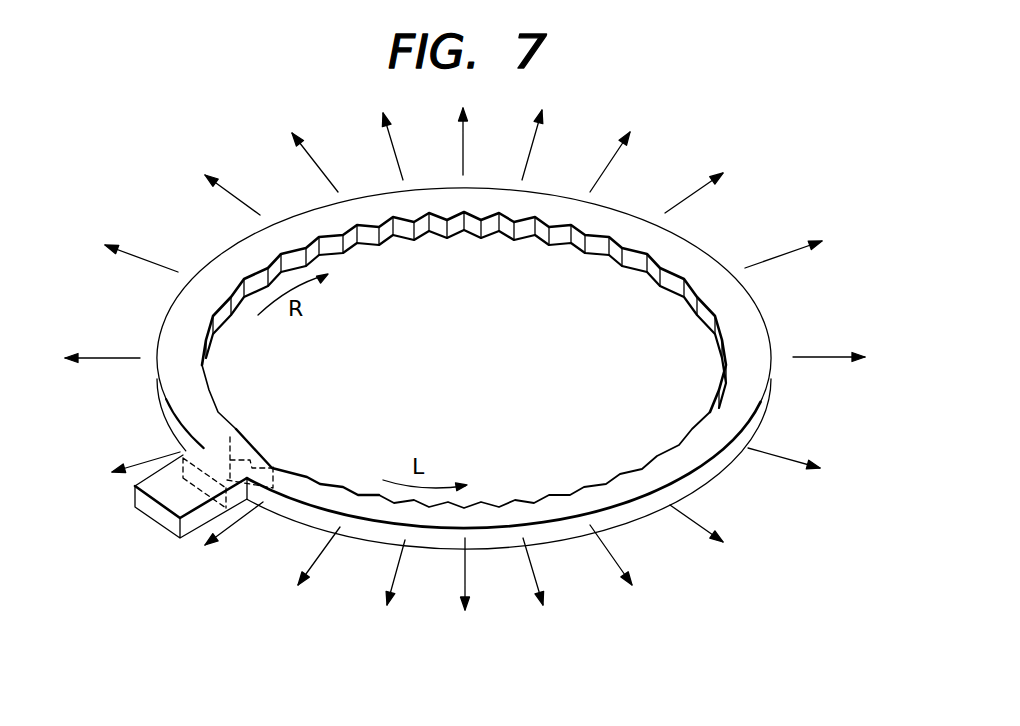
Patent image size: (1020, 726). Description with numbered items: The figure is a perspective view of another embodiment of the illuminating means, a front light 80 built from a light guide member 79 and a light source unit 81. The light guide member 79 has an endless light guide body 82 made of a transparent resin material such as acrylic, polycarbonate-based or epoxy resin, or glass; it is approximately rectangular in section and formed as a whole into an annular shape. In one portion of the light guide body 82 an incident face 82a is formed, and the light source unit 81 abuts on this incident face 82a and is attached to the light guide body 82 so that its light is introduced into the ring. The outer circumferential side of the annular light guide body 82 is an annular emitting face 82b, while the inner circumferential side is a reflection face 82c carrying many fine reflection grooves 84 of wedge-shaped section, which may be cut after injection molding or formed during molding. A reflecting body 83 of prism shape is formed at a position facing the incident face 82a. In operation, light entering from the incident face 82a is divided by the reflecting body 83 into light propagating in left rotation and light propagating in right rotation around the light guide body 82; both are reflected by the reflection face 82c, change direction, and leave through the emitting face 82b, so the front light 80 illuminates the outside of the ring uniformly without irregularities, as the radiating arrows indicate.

The light guide member 79 is at (703, 250).
The front light 80 is at (670, 176).
The light source unit 81 is at (168, 535).
The light guide body 82 is at (294, 228).
The incident face 82a is at (184, 470).
The emitting face 82b is at (640, 507).
The reflection face 82c is at (385, 247).
The reflecting body 83 is at (248, 458).
The reflection grooves 84 is at (540, 230).